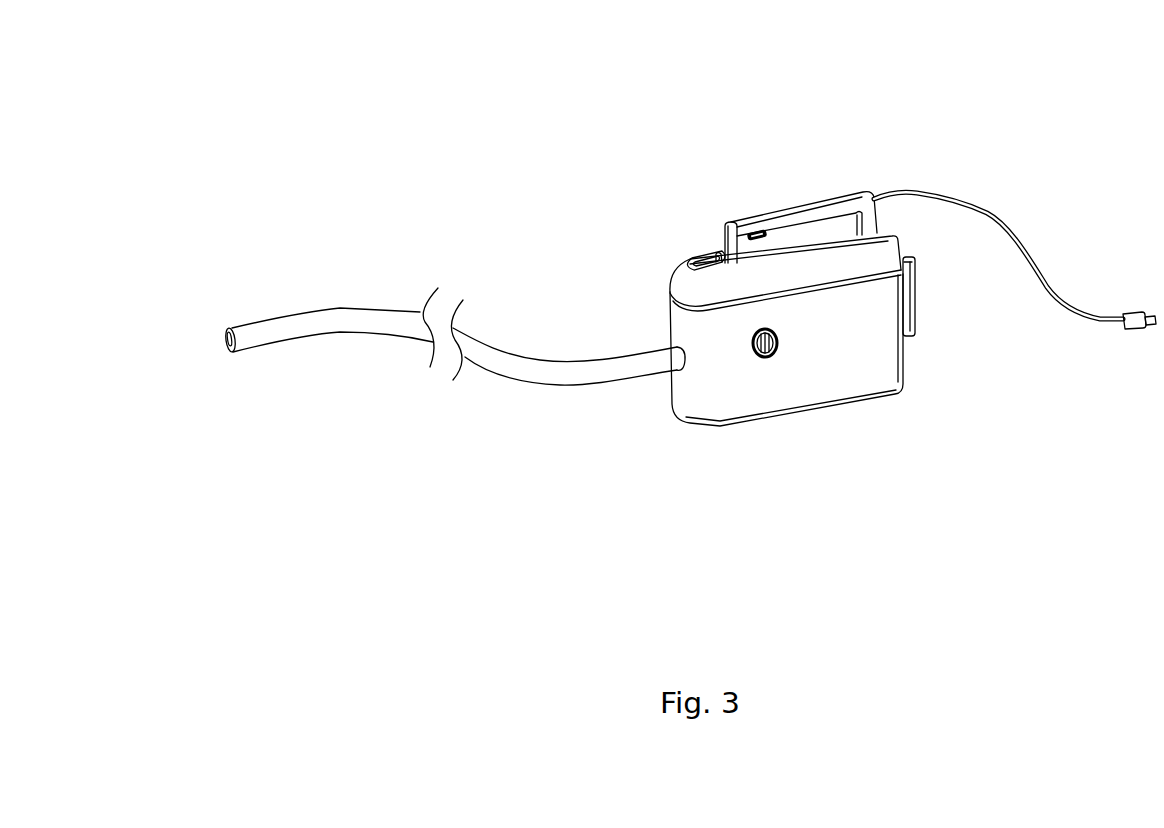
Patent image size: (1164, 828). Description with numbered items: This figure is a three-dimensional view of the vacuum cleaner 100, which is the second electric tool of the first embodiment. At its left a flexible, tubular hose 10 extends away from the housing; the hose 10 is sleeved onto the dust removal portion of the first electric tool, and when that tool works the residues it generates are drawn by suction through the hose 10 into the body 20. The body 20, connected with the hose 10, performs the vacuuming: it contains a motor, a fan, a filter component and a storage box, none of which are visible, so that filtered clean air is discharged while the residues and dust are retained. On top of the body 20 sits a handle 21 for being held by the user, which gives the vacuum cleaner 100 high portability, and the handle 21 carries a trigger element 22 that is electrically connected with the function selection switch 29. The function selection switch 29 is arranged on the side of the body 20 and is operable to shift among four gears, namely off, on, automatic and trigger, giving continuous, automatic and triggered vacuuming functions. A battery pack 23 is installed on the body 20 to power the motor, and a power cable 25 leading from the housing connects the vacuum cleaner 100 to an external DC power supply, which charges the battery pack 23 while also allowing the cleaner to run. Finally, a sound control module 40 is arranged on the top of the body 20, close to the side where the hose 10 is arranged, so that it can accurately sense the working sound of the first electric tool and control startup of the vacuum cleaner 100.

The vacuum cleaner 100 is at (553, 70).
The hose 10 is at (382, 317).
The body 20 is at (862, 358).
The handle 21 is at (812, 208).
The trigger element 22 is at (763, 233).
The battery pack 23 is at (913, 302).
The power cable 25 is at (988, 213).
The function selection switch 29 is at (773, 352).
The sound control module 40 is at (719, 255).